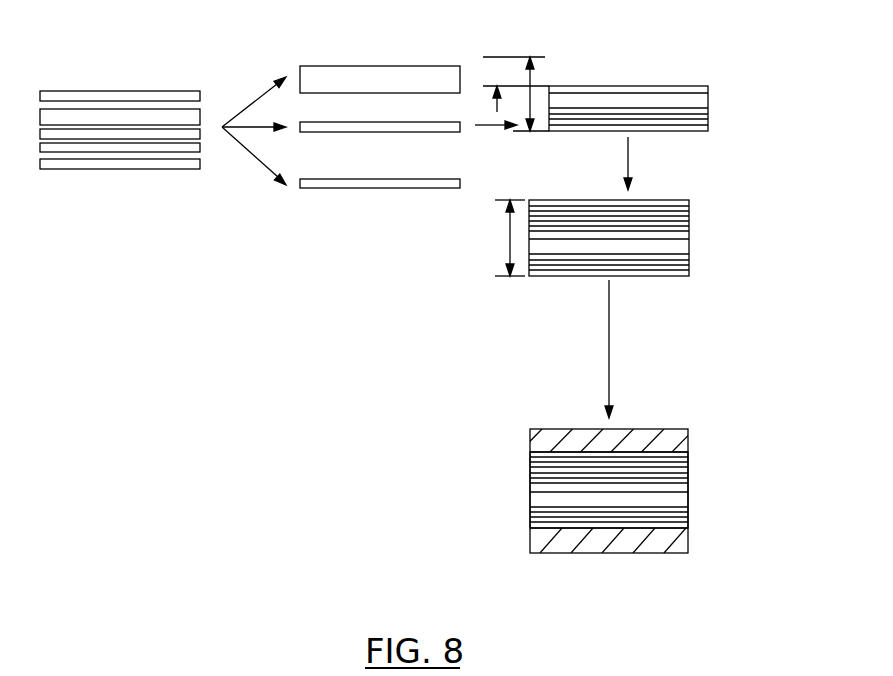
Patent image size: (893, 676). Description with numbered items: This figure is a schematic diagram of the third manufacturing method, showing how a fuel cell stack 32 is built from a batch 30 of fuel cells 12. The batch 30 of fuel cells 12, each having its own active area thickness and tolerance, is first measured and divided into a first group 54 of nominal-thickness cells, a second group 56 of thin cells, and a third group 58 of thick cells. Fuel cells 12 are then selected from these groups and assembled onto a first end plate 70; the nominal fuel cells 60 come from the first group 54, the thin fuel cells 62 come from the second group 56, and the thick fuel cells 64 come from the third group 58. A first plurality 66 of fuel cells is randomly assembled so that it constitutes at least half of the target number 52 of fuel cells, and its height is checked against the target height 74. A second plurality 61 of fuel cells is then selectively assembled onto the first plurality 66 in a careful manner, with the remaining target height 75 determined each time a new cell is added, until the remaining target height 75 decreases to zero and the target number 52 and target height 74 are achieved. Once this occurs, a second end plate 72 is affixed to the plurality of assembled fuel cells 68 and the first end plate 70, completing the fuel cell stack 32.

The batch of fuel cells 30 is at (149, 104).
The fuel cells 12 is at (200, 116).
The third group 58 is at (423, 66).
The second group 56 is at (423, 122).
The first group 54 is at (423, 179).
The remaining target height 75 is at (498, 45).
The target height 74 is at (531, 97).
The nominal fuel cells 60 is at (629, 102).
The thick fuel cells 64 is at (673, 102).
The thin fuel cells 62 is at (680, 121).
The first plurality of fuel cells 66 is at (717, 86).
The second plurality of fuel cells 61 is at (692, 200).
The fuel cell stack 32 is at (598, 452).
The second end plate 72 is at (690, 440).
The first end plate 70 is at (690, 540).
The target number of fuel cells 52 is at (560, 490).
The plurality of assembled fuel cells 68 is at (522, 452).